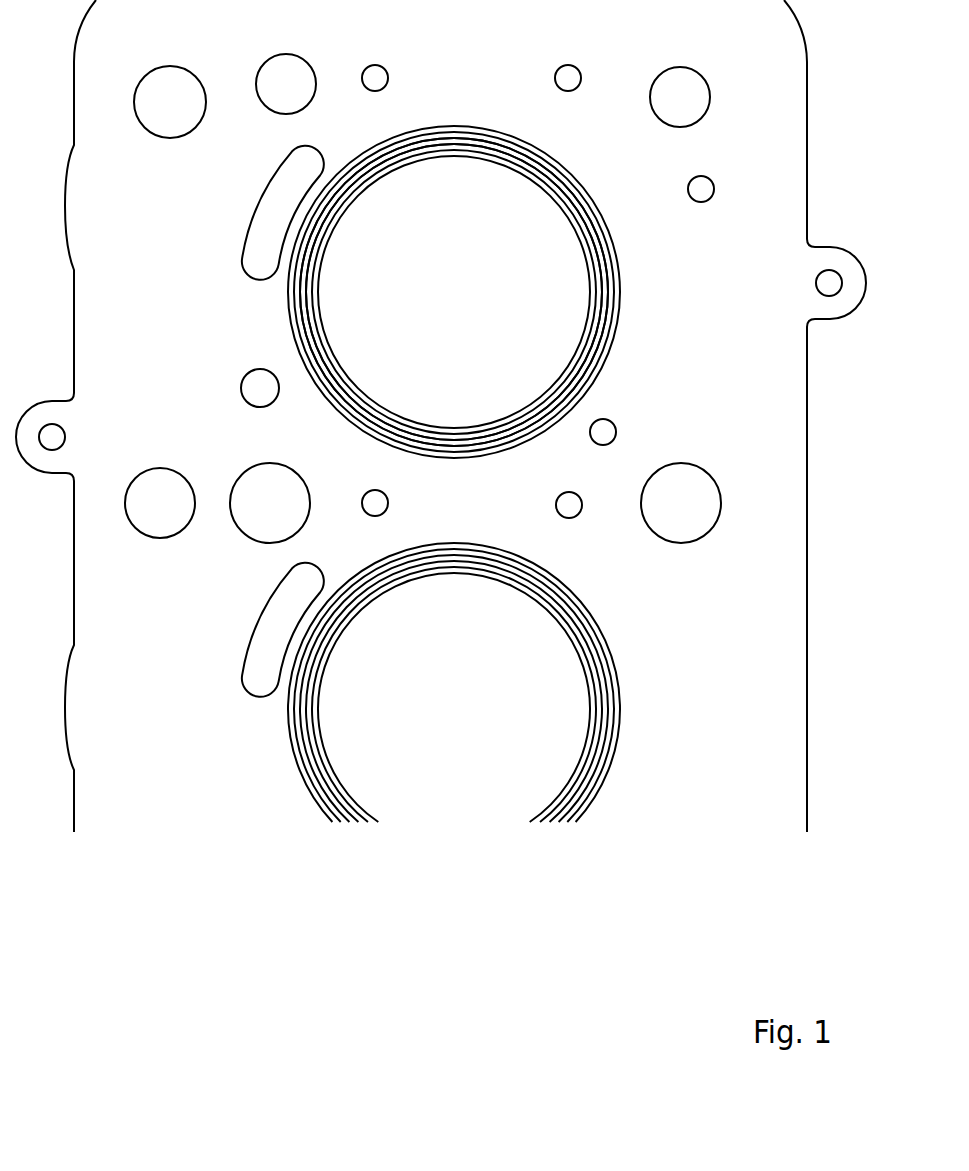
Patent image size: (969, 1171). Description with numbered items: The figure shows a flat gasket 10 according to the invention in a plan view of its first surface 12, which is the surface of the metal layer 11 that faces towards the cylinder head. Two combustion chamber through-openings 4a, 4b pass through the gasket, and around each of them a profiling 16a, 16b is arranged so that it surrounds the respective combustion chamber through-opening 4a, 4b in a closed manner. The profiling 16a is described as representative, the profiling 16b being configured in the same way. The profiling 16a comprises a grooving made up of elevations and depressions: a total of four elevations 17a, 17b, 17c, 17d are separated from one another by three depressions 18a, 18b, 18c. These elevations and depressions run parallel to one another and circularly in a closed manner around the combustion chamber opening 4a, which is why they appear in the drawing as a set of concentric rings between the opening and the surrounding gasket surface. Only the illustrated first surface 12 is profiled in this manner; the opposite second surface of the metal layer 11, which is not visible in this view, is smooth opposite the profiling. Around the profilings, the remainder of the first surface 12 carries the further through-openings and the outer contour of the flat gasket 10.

The combustion chamber through-opening 4a is at (485, 292).
The combustion chamber through-opening 4b is at (488, 682).
The flat gasket 10 is at (770, 531).
The metal layer 11 is at (772, 685).
The first surface 12 is at (765, 387).
The profiling 16a is at (597, 257).
The profiling 16b is at (598, 678).
The elevation 17a is at (592, 298).
The elevation 17b is at (597, 261).
The elevation 17c is at (605, 294).
The elevation 17d is at (605, 337).
The depression 18a is at (582, 355).
The depression 18b is at (585, 216).
The depression 18c is at (595, 362).